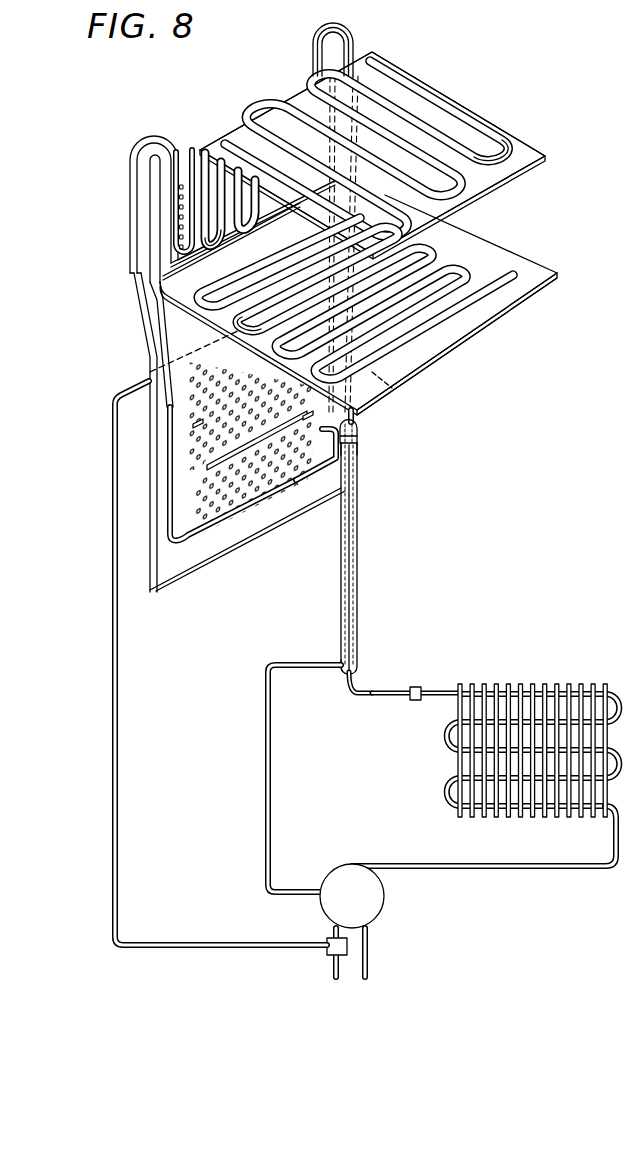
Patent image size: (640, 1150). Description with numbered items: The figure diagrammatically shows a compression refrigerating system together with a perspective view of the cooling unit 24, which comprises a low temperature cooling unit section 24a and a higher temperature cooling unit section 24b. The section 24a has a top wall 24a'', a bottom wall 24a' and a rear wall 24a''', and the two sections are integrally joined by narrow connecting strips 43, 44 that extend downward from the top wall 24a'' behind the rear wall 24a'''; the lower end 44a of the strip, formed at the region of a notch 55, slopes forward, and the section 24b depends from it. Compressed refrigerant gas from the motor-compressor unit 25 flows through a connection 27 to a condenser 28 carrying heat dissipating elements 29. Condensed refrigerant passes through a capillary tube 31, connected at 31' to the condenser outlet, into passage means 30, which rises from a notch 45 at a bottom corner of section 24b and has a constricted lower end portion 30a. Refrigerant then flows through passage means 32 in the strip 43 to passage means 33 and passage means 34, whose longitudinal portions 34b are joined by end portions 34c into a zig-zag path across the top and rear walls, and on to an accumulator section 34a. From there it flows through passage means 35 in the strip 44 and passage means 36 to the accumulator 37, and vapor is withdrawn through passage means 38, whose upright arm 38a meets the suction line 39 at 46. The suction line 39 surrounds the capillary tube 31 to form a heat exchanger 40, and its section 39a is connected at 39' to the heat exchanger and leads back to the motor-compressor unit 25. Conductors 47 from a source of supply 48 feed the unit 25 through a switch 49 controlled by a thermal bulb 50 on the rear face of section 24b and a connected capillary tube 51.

The cooling unit 24 is at (460, 420).
The low temperature cooling unit section 24a is at (393, 153).
The bottom wall 24a' is at (359, 305).
The top wall 24a'' is at (392, 155).
The rear wall 24a''' is at (253, 177).
The higher temperature cooling unit section 24b is at (220, 556).
The motor-compressor unit 25 is at (386, 908).
The connection 27 is at (535, 873).
The condenser 28 is at (452, 735).
The heat dissipating elements 29 is at (458, 768).
The passage means 30 is at (392, 388).
The constricted lower end portion 30a is at (357, 417).
The capillary tube 31 is at (379, 558).
The connection of capillary tube to condenser outlet 31' is at (416, 675).
The passage means 32 is at (425, 84).
The passage means 33 is at (443, 330).
The passage means 34 is at (262, 212).
The accumulator section 34a is at (178, 221).
The longitudinal portions 34b is at (450, 137).
The end portions 34c is at (236, 234).
The passage means 35 is at (147, 262).
The passage means 36 is at (167, 474).
The accumulator 37 is at (200, 375).
The passage means 38 is at (333, 479).
The upright arm 38a is at (360, 434).
The suction line 39 is at (374, 558).
The connection of suction line section 39' is at (316, 654).
The section of suction line 39a is at (272, 817).
The heat exchanger 40 is at (342, 679).
The connecting strip 43 is at (316, 62).
The connecting strip 44 is at (138, 247).
The lower end of connecting strip 44a is at (148, 321).
The notch 45 is at (360, 452).
The position of suction line end 46 is at (358, 439).
The conductors 47 is at (370, 965).
The source of supply 48 is at (350, 982).
The switch 49 is at (330, 953).
The thermal bulb 50 is at (240, 323).
The capillary tube 51 is at (112, 525).
The notch 55 is at (148, 341).